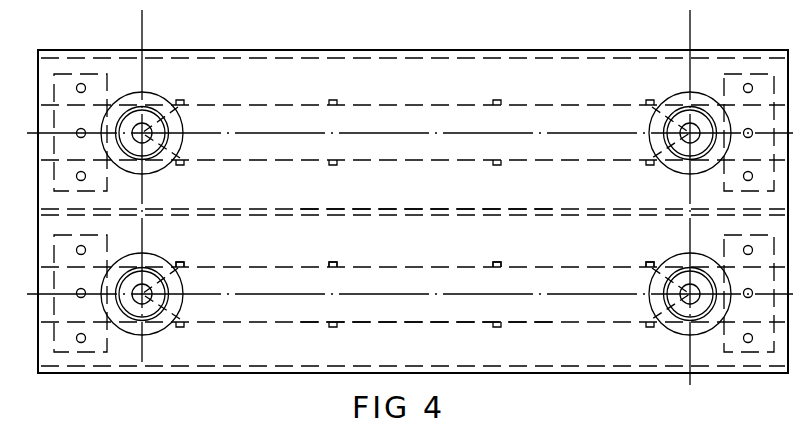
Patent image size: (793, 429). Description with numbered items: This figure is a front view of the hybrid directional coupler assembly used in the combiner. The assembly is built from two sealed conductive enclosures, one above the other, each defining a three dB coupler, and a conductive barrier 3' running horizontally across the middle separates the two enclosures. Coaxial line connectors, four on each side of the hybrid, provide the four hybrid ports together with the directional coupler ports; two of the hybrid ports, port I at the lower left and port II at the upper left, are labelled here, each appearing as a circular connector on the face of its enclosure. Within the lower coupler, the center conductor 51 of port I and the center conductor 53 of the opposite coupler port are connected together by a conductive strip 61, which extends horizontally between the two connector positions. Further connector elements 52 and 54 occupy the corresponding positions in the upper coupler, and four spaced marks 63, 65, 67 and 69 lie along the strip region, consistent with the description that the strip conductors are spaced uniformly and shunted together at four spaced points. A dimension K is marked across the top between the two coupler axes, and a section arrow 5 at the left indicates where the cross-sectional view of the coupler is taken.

The center conductor 51 is at (145, 298).
The bushing 52 is at (145, 137).
The center conductor 53 is at (686, 300).
The bushing 54 is at (686, 137).
The conductive strip 61 is at (412, 308).
The stop 63 is at (182, 262).
The stop 65 is at (339, 259).
The stop 67 is at (502, 259).
The stop 69 is at (648, 263).
The conductive barrier 3' is at (430, 193).
The section line 5 is at (30, 284).
The dimension K is at (142, 25).
The hybrid port I is at (163, 250).
The hybrid port II is at (172, 91).